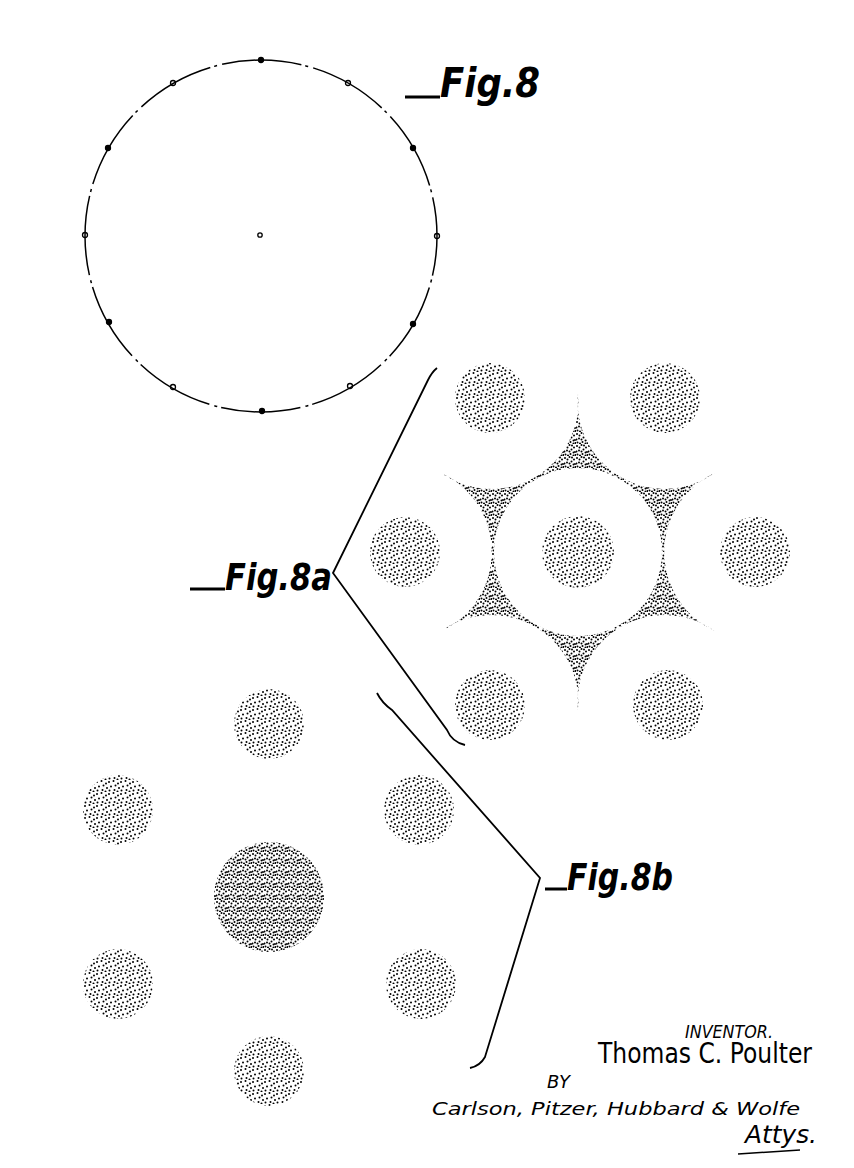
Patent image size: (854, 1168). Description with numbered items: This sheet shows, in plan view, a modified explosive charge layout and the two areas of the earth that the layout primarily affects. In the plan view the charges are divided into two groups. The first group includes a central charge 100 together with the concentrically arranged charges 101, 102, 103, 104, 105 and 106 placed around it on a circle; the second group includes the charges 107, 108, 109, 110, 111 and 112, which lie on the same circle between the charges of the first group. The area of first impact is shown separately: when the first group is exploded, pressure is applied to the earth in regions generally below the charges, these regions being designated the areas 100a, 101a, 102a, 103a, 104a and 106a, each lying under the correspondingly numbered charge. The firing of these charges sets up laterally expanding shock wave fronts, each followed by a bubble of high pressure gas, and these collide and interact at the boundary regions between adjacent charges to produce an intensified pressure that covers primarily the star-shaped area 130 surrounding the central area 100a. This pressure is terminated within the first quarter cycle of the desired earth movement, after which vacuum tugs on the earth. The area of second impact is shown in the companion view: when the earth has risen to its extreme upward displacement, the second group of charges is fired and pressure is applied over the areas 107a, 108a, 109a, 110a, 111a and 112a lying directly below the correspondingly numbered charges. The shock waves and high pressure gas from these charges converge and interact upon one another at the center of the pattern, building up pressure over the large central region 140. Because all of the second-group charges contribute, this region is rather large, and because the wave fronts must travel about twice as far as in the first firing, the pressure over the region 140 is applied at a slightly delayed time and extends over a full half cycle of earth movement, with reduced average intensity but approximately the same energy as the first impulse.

In FIG. 8, the central charge 100 is at (259, 238).
In FIG. 8, the concentrically arranged charge 101 is at (378, 63).
In FIG. 8, the concentrically arranged charge 102 is at (437, 236).
In FIG. 8, the concentrically arranged charge 103 is at (350, 386).
In FIG. 8, the concentrically arranged charge 104 is at (173, 387).
In FIG. 8, the concentrically arranged charge 105 is at (85, 235).
In FIG. 8, the concentrically arranged charge 106 is at (186, 51).
In FIG. 8, the second-group charge 107 is at (413, 148).
In FIG. 8, the second-group charge 108 is at (413, 324).
In FIG. 8, the second-group charge 109 is at (262, 411).
In FIG. 8, the second-group charge 110 is at (109, 322).
In FIG. 8, the second-group charge 111 is at (108, 148).
In FIG. 8, the second-group charge 112 is at (292, 34).
In FIG. 8A, the area of intensified pressure 130 is at (593, 457).
In FIG. 8B, the region of pressure buildup 140 is at (304, 898).
In FIG. 8A, the area affected by central charge 100a is at (572, 573).
In FIG. 8A, the area affected by charge 101a is at (688, 410).
In FIG. 8A, the area affected by charge 102a is at (747, 577).
In FIG. 8A, the area affected by charge 103a is at (672, 728).
In FIG. 8A, the area affected by charge 104a is at (502, 727).
In FIG. 8A, the area affected by charge 106a is at (480, 425).
In FIG. 8B, the area affected by second-group charge 107a is at (399, 836).
In FIG. 8B, the area affected by second-group charge 108a is at (397, 1013).
In FIG. 8B, the area affected by second-group charge 109a is at (263, 1101).
In FIG. 8B, the area affected by second-group charge 110a is at (112, 1013).
In FIG. 8B, the area affected by second-group charge 111a is at (112, 836).
In FIG. 8B, the area affected by second-group charge 112a is at (254, 750).